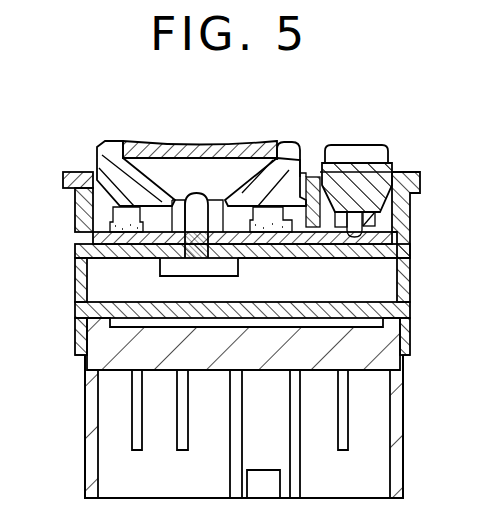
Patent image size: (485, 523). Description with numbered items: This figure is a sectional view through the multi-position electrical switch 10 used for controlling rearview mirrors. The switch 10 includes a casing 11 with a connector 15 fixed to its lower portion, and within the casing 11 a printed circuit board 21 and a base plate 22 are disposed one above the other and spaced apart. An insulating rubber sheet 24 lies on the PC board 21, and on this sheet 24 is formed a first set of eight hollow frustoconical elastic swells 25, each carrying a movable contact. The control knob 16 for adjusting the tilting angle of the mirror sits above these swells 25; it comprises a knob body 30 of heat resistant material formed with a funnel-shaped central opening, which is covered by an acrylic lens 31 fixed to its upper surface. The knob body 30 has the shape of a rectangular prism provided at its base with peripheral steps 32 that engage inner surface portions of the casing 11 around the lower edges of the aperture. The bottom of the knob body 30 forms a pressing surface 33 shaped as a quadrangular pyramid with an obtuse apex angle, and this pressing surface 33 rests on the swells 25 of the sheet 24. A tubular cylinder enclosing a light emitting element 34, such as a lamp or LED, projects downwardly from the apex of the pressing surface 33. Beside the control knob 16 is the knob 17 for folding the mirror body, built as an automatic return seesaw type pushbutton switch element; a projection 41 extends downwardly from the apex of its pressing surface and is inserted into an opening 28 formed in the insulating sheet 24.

The switch 10 is at (422, 168).
The casing 11 is at (410, 294).
The connector 15 is at (403, 423).
The control knob 16 is at (291, 142).
The knob 17 is at (353, 152).
The printed circuit board 21 is at (258, 253).
The base plate 22 is at (147, 310).
The insulating rubber sheet 24 is at (112, 259).
The swells 25 is at (77, 220).
The opening 28 is at (357, 256).
The knob body 30 is at (100, 145).
The lens 31 is at (230, 146).
The peripheral steps 32 is at (63, 180).
The pressing surface 33 is at (80, 208).
The light emitting element 34 is at (199, 193).
The projection 41 is at (378, 223).